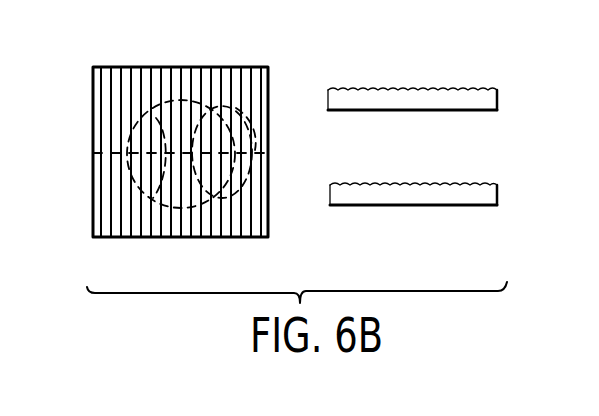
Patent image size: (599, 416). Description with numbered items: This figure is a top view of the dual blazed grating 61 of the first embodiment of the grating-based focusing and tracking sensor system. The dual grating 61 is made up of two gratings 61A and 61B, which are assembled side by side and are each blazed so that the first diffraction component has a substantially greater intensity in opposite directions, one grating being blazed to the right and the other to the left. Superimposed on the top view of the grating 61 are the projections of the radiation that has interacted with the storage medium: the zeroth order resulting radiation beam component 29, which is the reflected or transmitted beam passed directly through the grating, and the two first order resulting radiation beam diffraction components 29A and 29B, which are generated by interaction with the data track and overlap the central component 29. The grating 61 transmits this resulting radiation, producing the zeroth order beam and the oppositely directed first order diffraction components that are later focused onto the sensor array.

The dual blazed grating 61 is at (92, 210).
The grating 61A is at (445, 205).
The grating 61B is at (405, 87).
The zeroth order resulting radiation beam component 29 is at (247, 141).
The first order resulting radiation beam diffraction component 29A is at (130, 138).
The first order resulting radiation beam diffraction component 29B is at (238, 121).